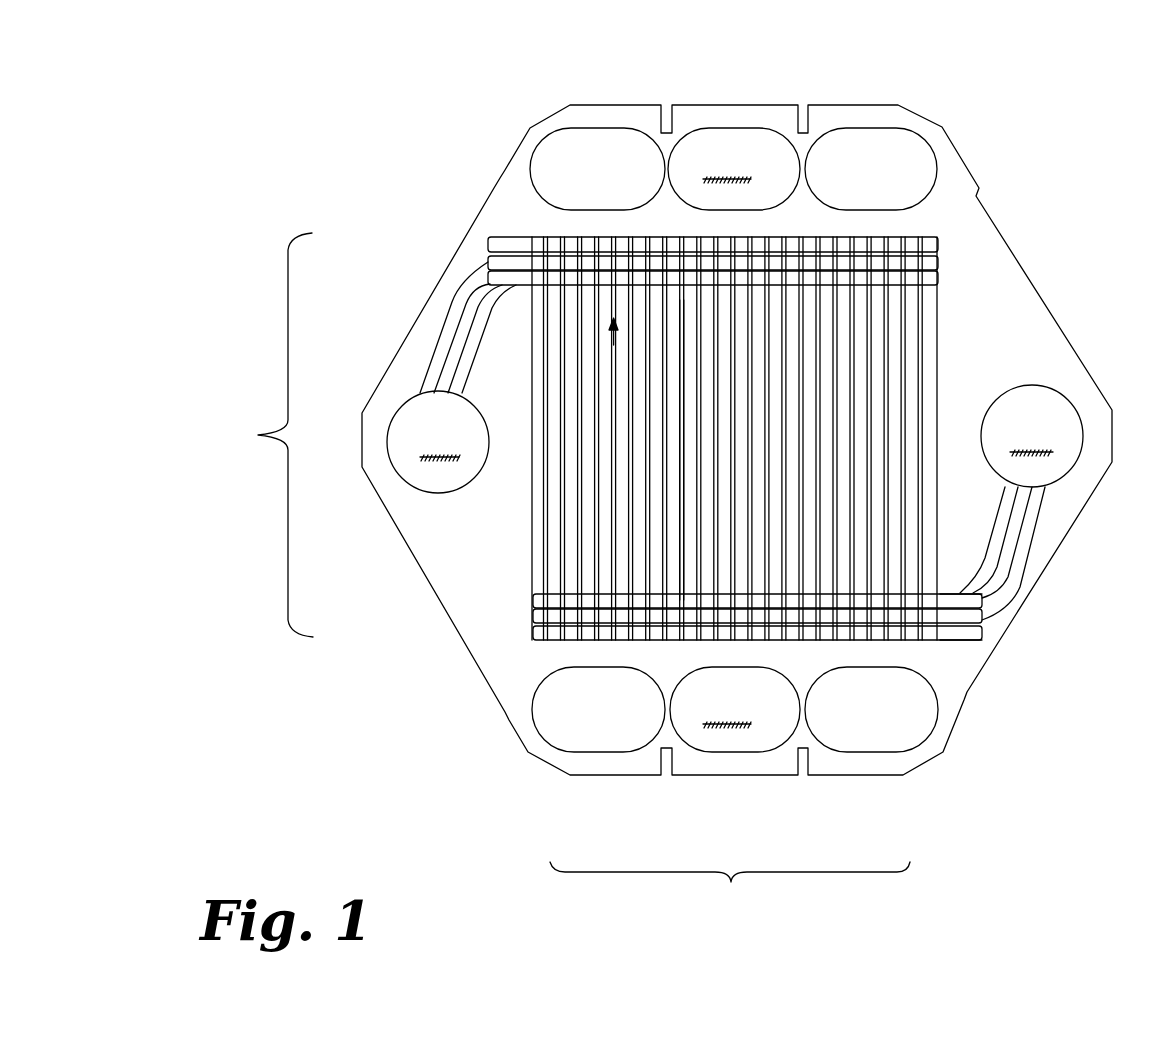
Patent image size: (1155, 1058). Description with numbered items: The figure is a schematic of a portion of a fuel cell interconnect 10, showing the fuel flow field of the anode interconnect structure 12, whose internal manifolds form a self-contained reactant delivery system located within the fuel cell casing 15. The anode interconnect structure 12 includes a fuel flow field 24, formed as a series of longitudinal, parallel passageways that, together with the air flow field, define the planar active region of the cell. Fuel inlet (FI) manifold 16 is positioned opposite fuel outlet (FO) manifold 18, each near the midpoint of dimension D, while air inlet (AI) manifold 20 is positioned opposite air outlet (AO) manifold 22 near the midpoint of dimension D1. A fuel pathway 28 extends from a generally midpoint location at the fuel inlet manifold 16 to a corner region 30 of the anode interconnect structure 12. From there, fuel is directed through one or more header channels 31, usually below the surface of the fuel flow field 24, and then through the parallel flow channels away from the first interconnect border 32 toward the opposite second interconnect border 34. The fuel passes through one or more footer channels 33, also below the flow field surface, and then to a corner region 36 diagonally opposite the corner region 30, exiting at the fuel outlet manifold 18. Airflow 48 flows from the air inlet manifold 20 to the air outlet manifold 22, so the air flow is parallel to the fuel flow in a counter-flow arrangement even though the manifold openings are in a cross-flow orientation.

The interconnect 10 is at (398, 120).
The anode interconnect structure 12 is at (937, 355).
The fuel cell casing 15 is at (1051, 318).
The fuel inlet manifold 16 is at (417, 448).
The fuel outlet manifold 18 is at (1067, 425).
The air inlet manifold 20 is at (737, 727).
The air outlet manifold 22 is at (748, 152).
The fuel flow field 24 is at (676, 482).
The fuel pathway 28 is at (468, 272).
The corner region 30 is at (513, 262).
The header channels 31 is at (935, 272).
The first interconnect border 32 is at (930, 237).
The footer channels 33 is at (930, 637).
The second interconnect border 34 is at (555, 643).
The corner region 36 is at (953, 635).
The airflow 48 is at (590, 357).